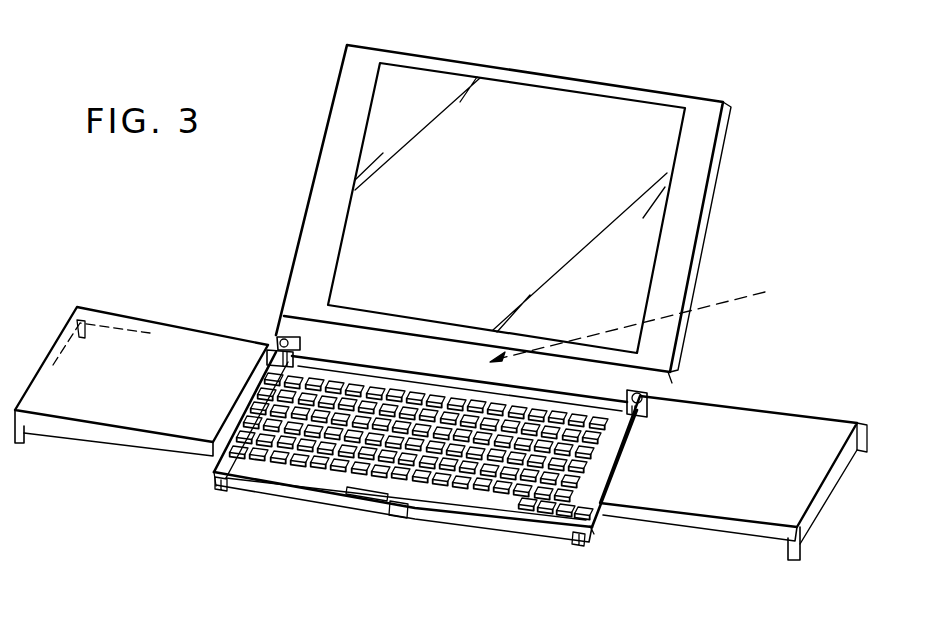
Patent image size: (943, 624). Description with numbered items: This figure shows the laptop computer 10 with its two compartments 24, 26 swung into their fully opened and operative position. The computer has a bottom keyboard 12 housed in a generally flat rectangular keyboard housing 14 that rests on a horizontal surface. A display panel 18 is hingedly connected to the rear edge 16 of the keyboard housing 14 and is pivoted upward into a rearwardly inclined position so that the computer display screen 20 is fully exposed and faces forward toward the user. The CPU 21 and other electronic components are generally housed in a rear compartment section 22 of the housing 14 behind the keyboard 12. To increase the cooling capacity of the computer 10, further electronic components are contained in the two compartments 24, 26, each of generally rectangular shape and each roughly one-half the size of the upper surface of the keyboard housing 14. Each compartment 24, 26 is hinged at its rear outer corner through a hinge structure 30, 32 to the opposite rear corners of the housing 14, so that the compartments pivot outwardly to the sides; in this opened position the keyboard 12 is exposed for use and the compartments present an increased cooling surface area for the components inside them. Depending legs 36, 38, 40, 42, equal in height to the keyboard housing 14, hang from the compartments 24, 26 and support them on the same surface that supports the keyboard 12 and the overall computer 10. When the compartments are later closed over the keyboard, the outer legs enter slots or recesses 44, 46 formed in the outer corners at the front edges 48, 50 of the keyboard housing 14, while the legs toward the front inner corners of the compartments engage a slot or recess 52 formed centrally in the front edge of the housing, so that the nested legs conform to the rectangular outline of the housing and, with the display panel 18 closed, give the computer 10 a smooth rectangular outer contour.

The laptop computer 10 is at (633, 65).
The bottom keyboard 12 is at (345, 464).
The keyboard housing 14 is at (447, 518).
The rear edge 16 is at (672, 382).
The display panel 18 is at (717, 171).
The computer display screen 20 is at (527, 205).
The CPU 21 is at (642, 318).
The rear compartment section 22 is at (283, 337).
The compartment 24 is at (117, 413).
The compartment 26 is at (798, 484).
The hinge structure 30 is at (274, 338).
The hinge structure 32 is at (670, 393).
The depending leg 36 is at (57, 327).
The depending leg 38 is at (24, 444).
The depending leg 40 is at (801, 551).
The depending leg 42 is at (863, 442).
The slot or recess 44 is at (219, 489).
The slot or recess 46 is at (570, 541).
The front edge 48 is at (213, 478).
The front edge 50 is at (593, 537).
The slot or recess 52 is at (398, 516).